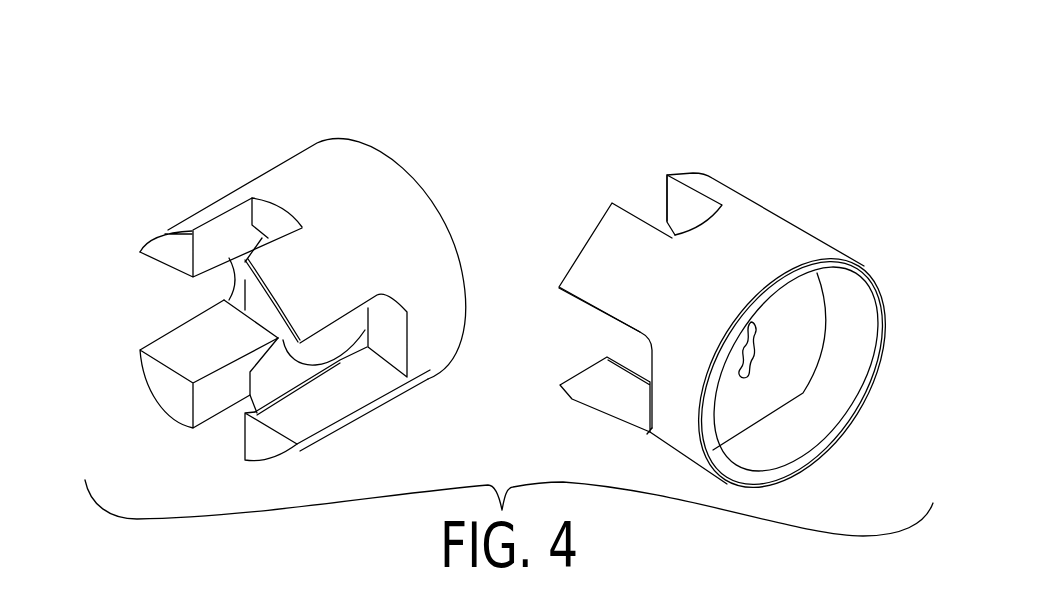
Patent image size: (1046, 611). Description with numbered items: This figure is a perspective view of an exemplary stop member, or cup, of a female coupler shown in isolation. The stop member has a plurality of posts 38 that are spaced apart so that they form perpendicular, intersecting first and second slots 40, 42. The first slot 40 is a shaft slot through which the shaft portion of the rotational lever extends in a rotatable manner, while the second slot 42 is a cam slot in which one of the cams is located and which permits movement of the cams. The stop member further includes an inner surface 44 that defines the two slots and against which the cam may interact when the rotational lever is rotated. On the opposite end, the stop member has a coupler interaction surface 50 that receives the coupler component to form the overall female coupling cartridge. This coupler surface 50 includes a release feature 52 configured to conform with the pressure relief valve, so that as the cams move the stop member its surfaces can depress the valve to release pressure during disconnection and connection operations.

The posts 38 is at (163, 230).
The first slot 40 is at (195, 303).
The second slot 42 is at (237, 395).
The inner surface 44 is at (340, 343).
The coupler interaction surface 50 is at (753, 415).
The release feature 52 is at (745, 373).